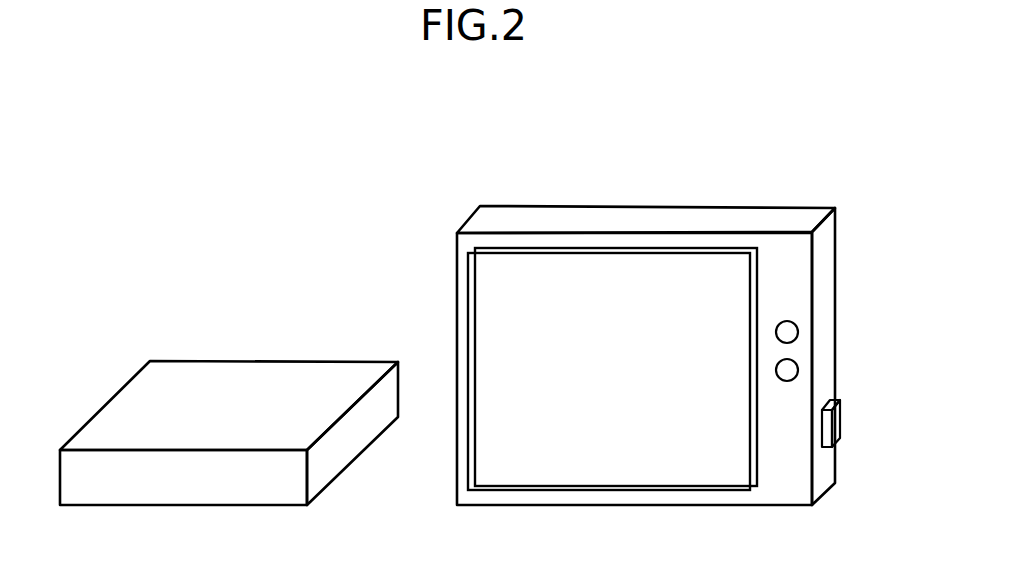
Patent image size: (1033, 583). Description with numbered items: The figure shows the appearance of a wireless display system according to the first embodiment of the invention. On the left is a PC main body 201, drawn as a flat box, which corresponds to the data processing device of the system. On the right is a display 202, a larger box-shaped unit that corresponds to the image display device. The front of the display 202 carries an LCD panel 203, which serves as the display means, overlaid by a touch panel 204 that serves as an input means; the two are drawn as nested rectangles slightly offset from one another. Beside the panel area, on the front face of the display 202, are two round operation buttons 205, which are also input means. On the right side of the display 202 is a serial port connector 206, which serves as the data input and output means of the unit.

The PC main body 201 is at (247, 373).
The display 202 is at (623, 220).
The LCD panel 203 is at (690, 247).
The touch panel 204 is at (633, 492).
The operation button 205 is at (795, 350).
The serial port connector 206 is at (833, 425).